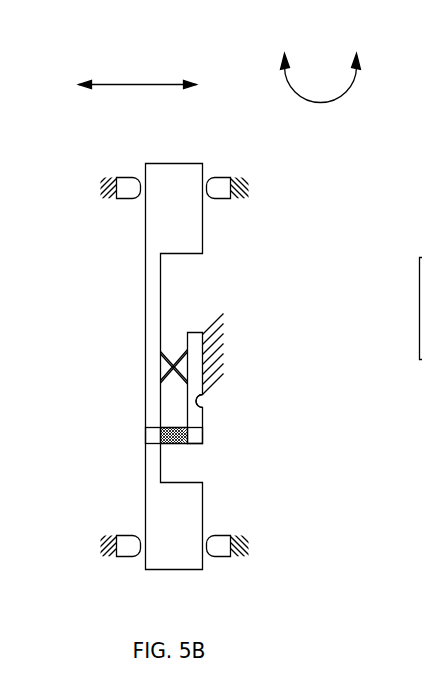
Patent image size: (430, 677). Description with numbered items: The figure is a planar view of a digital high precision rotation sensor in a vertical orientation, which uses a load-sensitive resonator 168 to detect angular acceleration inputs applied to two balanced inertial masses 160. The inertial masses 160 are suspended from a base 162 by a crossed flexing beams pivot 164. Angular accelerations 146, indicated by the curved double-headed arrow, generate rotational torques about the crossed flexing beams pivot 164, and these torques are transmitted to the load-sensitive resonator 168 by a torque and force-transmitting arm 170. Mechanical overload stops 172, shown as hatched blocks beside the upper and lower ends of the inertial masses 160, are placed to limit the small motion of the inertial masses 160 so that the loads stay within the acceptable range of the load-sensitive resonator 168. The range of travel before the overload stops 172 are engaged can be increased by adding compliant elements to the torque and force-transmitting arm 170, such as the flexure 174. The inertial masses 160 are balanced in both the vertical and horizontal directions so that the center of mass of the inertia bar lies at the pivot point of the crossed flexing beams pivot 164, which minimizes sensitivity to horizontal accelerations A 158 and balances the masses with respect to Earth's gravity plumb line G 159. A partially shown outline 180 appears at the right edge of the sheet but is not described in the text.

The angular accelerations 146 is at (322, 70).
The horizontal accelerations A 158 is at (143, 62).
The Earth's gravity plumb line G 159 is at (414, 111).
The inertial masses 160 is at (184, 213).
The base 162 is at (197, 358).
The crossed flexing beams pivot 164 is at (172, 352).
The load-sensitive resonator 168 is at (200, 444).
The torque and force-transmitting arm 170 is at (195, 415).
The mechanical overload stops 172 is at (127, 177).
The flexure 174 is at (203, 403).
The housing 180 is at (415, 292).